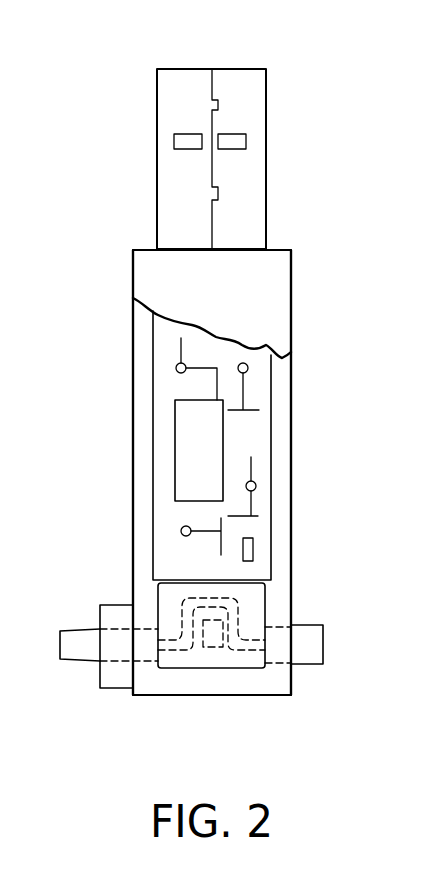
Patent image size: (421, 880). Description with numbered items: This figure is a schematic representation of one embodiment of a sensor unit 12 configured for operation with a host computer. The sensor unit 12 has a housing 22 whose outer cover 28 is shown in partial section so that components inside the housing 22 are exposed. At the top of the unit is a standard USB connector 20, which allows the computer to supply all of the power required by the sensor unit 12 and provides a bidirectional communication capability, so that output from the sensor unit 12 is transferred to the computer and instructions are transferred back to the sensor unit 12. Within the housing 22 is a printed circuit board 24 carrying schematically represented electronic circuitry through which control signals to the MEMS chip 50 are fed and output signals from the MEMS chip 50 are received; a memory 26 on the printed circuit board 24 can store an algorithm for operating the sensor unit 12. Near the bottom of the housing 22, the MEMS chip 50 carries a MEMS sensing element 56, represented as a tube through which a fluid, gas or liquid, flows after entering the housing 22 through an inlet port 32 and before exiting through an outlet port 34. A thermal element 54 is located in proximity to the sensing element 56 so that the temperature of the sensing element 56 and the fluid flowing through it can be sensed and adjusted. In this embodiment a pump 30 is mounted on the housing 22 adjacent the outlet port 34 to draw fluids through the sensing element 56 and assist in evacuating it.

The sensor unit 12 is at (308, 308).
The standard USB connector 20 is at (157, 83).
The housing 22 is at (133, 377).
The printed circuit board 24 is at (165, 537).
The memory 26 is at (185, 450).
The outer cover 28 is at (271, 262).
The pump 30 is at (107, 680).
The inlet port 32 is at (280, 665).
The outlet port 34 is at (143, 630).
The MEMS chip 50 is at (252, 603).
The thermal element 54 is at (207, 632).
The MEMS sensing element 56 is at (215, 598).